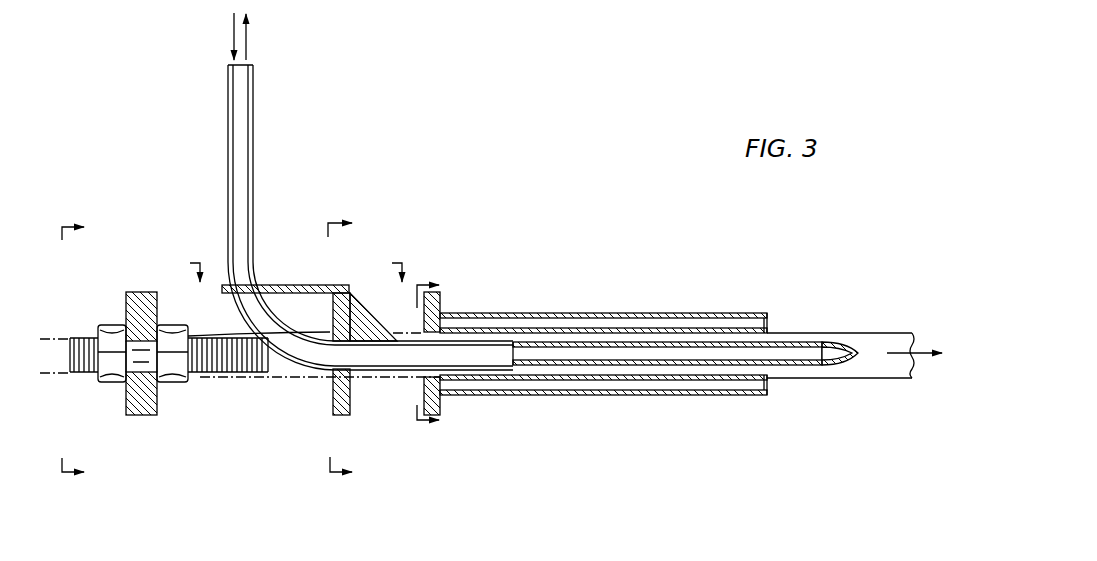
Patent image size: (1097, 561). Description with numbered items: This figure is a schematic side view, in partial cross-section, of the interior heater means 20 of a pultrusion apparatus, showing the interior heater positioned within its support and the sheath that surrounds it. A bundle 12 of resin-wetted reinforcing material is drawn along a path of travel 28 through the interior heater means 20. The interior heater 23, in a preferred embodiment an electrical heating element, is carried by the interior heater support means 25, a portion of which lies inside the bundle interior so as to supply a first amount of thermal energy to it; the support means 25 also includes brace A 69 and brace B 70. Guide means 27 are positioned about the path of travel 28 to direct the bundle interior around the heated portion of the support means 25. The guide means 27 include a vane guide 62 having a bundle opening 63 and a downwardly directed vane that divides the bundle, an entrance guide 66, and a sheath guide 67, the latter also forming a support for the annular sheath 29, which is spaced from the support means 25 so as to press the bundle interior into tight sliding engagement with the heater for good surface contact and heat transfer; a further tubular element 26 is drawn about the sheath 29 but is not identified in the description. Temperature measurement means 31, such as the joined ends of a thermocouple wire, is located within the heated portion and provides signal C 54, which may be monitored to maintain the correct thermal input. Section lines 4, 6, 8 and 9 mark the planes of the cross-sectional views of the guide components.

The interior heater means 20 is at (571, 130).
The bundle 12 is at (795, 381).
The interior heater 23 is at (716, 346).
The interior heater support means 25 is at (284, 222).
The outer sleeve 26 is at (657, 312).
The guide means 27 is at (160, 422).
The path of travel 28 is at (933, 357).
The sheath 29 is at (576, 327).
The temperature measurement means 31 is at (845, 363).
The signal C 54 is at (248, 42).
The vane guide 62 is at (139, 291).
The bundle opening 63 is at (112, 383).
The entrance guide 66 is at (332, 400).
The sheath guide 67 is at (442, 308).
The brace A 69 is at (280, 284).
The brace B 70 is at (368, 291).
The section line 4- 4 is at (84, 360).
The section line 6- 6 is at (350, 353).
The section line 8- 8 is at (438, 357).
The section line 9- 9 is at (299, 286).